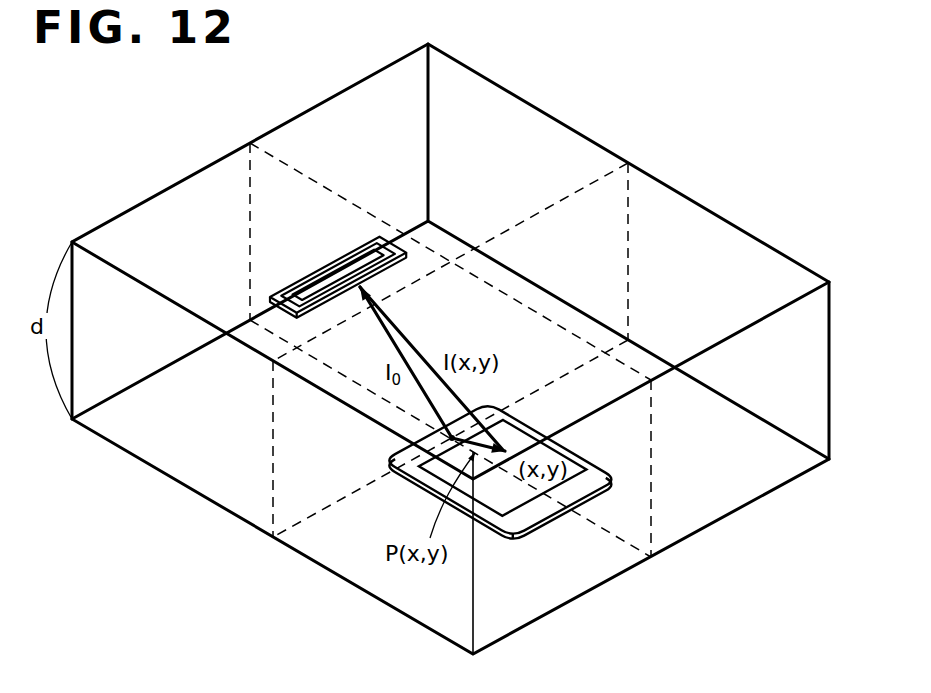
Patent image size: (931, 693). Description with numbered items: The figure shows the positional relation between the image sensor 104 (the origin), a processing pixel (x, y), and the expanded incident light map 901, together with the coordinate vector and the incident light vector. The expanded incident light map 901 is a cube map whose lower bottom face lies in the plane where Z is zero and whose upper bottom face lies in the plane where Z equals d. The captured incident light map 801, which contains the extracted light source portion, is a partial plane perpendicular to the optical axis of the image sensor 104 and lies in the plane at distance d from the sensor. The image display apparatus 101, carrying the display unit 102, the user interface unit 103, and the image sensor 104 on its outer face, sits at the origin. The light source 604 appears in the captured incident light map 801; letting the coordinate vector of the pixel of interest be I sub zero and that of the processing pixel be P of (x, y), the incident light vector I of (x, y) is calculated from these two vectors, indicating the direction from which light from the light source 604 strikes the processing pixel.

The image display apparatus 101 is at (550, 519).
The display unit 102 is at (611, 526).
The user interface unit 103 is at (580, 467).
The image sensor 104 is at (437, 442).
The light source 604 is at (343, 256).
The captured incident light map 801 is at (625, 128).
The expanded incident light map 901 is at (477, 349).